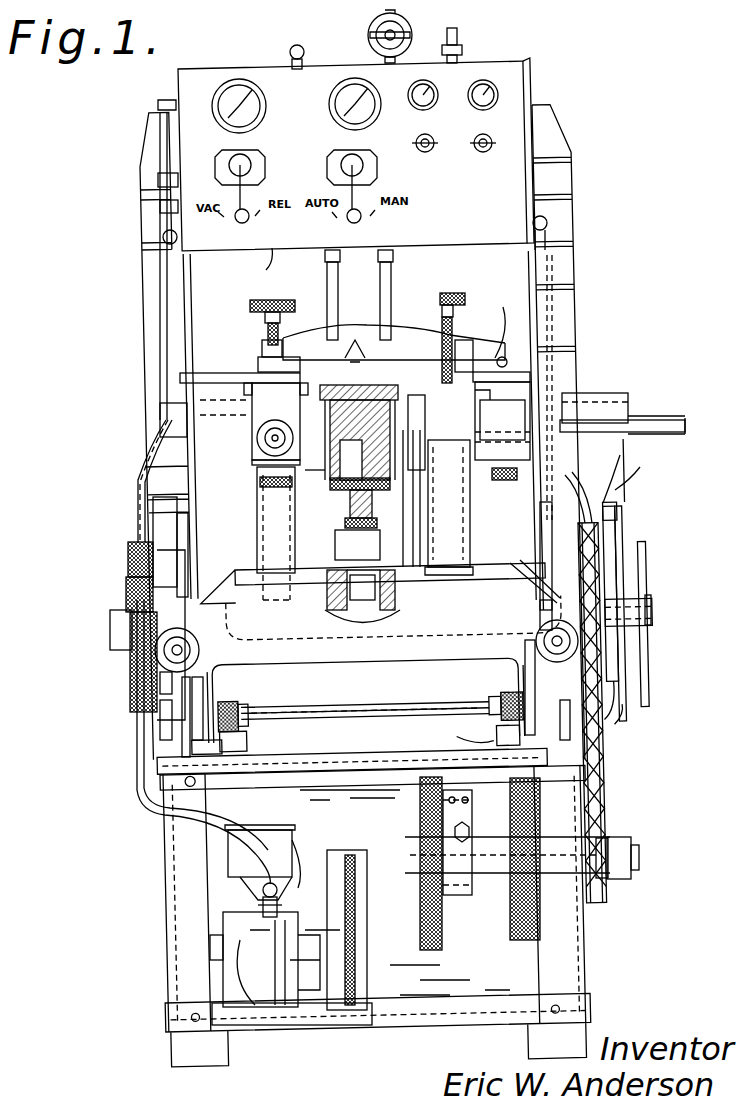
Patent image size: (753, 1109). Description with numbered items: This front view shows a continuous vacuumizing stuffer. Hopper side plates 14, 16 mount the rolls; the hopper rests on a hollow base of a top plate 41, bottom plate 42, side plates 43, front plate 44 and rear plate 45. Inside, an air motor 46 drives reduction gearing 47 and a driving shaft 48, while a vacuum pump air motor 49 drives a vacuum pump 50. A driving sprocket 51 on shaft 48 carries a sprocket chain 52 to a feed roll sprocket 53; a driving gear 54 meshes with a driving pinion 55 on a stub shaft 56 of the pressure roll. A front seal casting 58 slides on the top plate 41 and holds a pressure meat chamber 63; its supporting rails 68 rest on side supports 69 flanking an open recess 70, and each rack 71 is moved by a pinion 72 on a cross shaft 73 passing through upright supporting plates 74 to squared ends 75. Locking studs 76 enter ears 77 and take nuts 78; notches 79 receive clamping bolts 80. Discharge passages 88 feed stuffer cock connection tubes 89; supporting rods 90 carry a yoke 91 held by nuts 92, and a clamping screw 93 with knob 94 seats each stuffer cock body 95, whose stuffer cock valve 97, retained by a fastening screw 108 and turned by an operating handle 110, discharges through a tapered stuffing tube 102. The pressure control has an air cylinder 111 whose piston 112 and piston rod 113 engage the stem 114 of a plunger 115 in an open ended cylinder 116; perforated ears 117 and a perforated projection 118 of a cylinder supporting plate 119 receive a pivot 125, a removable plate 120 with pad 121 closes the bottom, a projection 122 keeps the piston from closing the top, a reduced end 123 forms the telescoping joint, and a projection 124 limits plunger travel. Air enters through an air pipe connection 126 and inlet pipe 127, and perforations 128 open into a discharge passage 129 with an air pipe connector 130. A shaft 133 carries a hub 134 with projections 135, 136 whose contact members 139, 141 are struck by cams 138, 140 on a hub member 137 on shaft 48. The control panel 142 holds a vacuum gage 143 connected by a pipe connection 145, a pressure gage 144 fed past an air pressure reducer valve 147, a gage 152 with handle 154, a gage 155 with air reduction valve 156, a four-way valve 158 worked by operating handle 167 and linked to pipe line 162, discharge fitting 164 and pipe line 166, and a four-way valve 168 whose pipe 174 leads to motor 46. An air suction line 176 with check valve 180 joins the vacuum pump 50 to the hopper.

The side plate 14 is at (190, 467).
The side plate 16 is at (540, 335).
The top plate 41 is at (322, 730).
The bottom plate 42 is at (298, 1032).
The side plates 43 is at (442, 988).
The front plate 44 is at (585, 935).
The rear plate 45 is at (163, 873).
The air motor 46 is at (465, 818).
The reduction gearing 47 is at (500, 870).
The driving shaft 48 is at (655, 600).
The vacuum pump air motor 49 is at (262, 985).
The vacuum pump 50 is at (228, 932).
The driving sprocket 51 is at (612, 830).
The sprocket chain 52 is at (600, 822).
The feed roll sprocket 53 is at (600, 548).
The driving gear 54 is at (140, 658).
The driving pinion 55 is at (137, 556).
The stub shaft 56 is at (132, 580).
The front seal casting 58 is at (457, 654).
The pressure meat chamber 63 is at (270, 640).
The supporting rails 68 is at (213, 700).
The side supports 69 is at (212, 770).
The open recess 70 is at (410, 663).
The rack 71 is at (245, 743).
The pinion 72 is at (245, 706).
The cross shaft 73 is at (384, 720).
The upright supporting plate 74 is at (182, 722).
The squared ends 75 is at (187, 730).
The locking stud 76 is at (182, 643).
The ear 77 is at (145, 620).
The nut 78 is at (199, 651).
The notches 79 is at (197, 608).
The bolts 80 is at (172, 683).
The discharge passages 88 is at (240, 592).
The stuffer cock connection tube 89 is at (257, 507).
The supporting rods 90 is at (285, 578).
The yoke 91 is at (355, 325).
The nuts 92 is at (325, 298).
The clamping screw 93 is at (266, 332).
The knob 94 is at (252, 302).
The stuffer cock body 95 is at (250, 412).
The stuffer cock valve 97 is at (511, 354).
The tapered stuffing tube 102 is at (655, 432).
The fastening screw 108 is at (260, 483).
The operating handle 110 is at (200, 378).
The air cylinder 111 is at (330, 490).
The piston 112 is at (395, 462).
The piston rod 113 is at (392, 478).
The stem 114 is at (378, 486).
The plunger 115 is at (380, 512).
The open ended cylinder 116 is at (345, 622).
The perforated ears 117 is at (349, 360).
The perforated projection 118 is at (257, 438).
The cylinder supporting plate 119 is at (262, 347).
The removable plate 120 is at (325, 500).
The pad 121 is at (325, 495).
The projection 122 is at (440, 372).
The reduced end 123 is at (325, 520).
The projection 124 is at (370, 625).
The pivot 125 is at (303, 398).
The air pipe connection 126 is at (258, 362).
The air pressure inlet pipe 127 is at (325, 268).
The perforations 128 is at (425, 425).
The discharge passage 129 is at (470, 402).
The air pipe connector 130 is at (393, 272).
The shaft 133 is at (157, 427).
The hub 134 is at (595, 400).
The projections 135 is at (640, 480).
The projection 136 is at (620, 632).
The hub member 137 is at (628, 660).
The cams 138 is at (606, 710).
The contact member 139 is at (585, 490).
The cam 140 is at (648, 703).
The contact member 141 is at (652, 622).
The control panel 142 is at (251, 263).
The gage 143 is at (256, 114).
The gage 144 is at (340, 124).
The pipe connection 145 is at (312, 38).
The air pressure reducer valve 147 is at (408, 22).
The pressure gage 152 is at (425, 110).
The handle 154 is at (438, 150).
The gage 155 is at (492, 108).
The air reduction valve 156 is at (490, 150).
The four-way valve 158 is at (222, 154).
The pipe line 162 is at (160, 237).
The discharge fitting 164 is at (160, 176).
The pipe line 166 is at (458, 34).
The operating handle 167 is at (236, 224).
The four-way valve 168 is at (330, 163).
The pipe 174 is at (550, 258).
The air suction line 176 is at (160, 141).
The check valve 180 is at (262, 912).